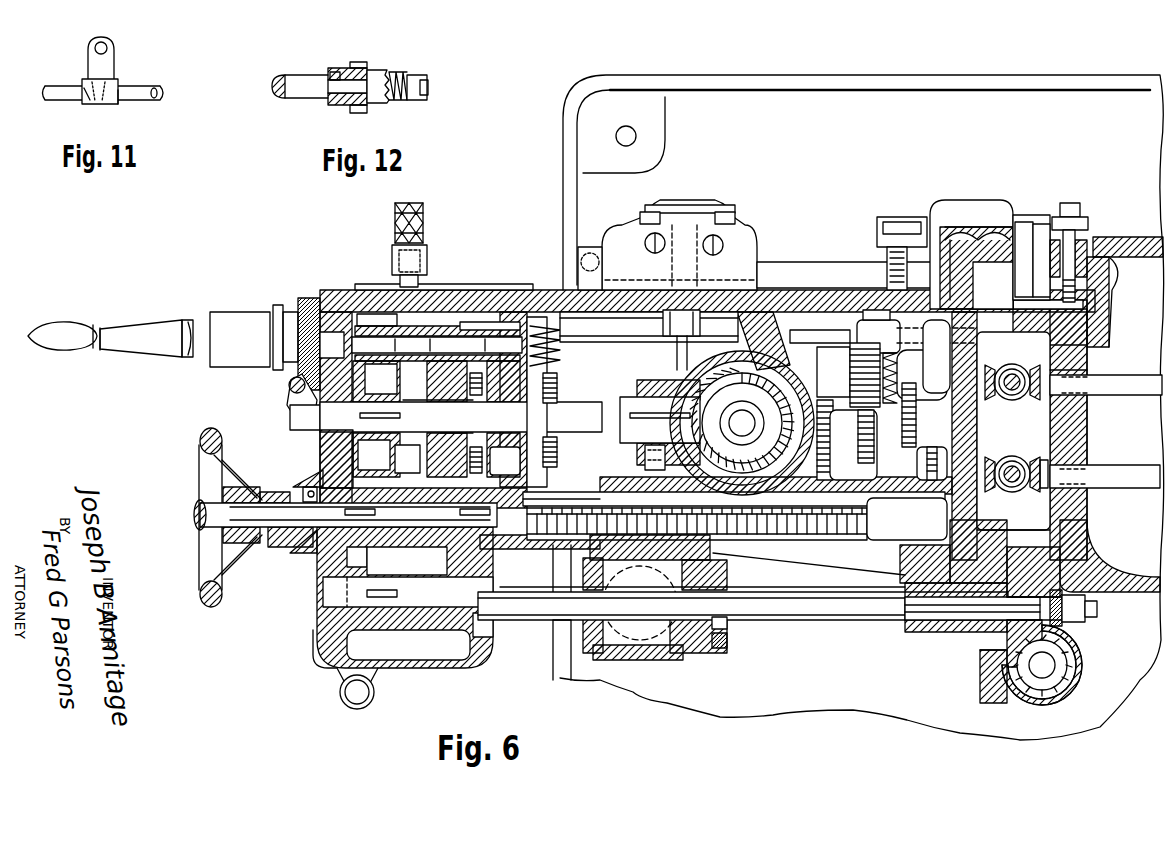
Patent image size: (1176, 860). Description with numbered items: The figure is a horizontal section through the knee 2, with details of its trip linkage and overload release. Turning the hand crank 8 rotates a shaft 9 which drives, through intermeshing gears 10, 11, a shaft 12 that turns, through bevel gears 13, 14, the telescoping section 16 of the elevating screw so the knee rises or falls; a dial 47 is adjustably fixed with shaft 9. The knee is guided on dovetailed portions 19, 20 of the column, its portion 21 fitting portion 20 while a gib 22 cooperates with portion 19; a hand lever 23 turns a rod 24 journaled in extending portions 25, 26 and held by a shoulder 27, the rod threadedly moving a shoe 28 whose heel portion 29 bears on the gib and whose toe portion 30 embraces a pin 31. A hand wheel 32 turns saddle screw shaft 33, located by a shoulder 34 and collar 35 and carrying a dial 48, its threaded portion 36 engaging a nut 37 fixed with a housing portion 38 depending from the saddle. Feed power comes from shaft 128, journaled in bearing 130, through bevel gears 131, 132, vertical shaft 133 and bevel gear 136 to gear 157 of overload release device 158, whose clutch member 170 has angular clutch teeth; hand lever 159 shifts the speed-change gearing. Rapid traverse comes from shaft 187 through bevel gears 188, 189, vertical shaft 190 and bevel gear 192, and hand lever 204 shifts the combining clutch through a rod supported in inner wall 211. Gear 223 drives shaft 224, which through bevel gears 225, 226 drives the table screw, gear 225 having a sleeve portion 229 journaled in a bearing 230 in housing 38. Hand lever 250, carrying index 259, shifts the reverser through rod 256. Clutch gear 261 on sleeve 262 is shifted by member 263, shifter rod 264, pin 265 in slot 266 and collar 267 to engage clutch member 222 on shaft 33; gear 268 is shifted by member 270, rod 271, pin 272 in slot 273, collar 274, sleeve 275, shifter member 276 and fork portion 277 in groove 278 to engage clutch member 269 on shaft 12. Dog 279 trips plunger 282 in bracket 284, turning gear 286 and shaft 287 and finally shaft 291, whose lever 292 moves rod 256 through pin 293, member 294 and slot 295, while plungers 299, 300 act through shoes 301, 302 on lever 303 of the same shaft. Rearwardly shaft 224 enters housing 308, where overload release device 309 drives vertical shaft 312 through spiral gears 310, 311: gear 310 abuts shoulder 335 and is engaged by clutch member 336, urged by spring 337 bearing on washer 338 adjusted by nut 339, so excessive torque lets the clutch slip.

In FIG. 6, the knee 2 is at (540, 290).
In FIG. 6, the hand crank 8 is at (135, 330).
In FIG. 6, the shaft 9 is at (332, 344).
In FIG. 6, the gear 10 is at (377, 317).
In FIG. 6, the gear 11 is at (381, 379).
In FIG. 6, the shaft 12 is at (461, 417).
In FIG. 6, the bevel gear 13 is at (698, 385).
In FIG. 6, the bevel gear 14 is at (759, 376).
In FIG. 6, the telescoping section 16 is at (742, 423).
In FIG. 6, the dovetailed portion 19 is at (980, 343).
In FIG. 6, the dovetailed portion 20 is at (985, 535).
In FIG. 6, the knee portion 21 is at (945, 585).
In FIG. 6, the gib 22 is at (1090, 322).
In FIG. 6, the hand lever 23 is at (595, 250).
In FIG. 6, the rod 24 is at (780, 262).
In FIG. 6, the extending portion 25 is at (740, 250).
In FIG. 6, the extending portion 26 is at (938, 215).
In FIG. 6, the shoulder 27 is at (955, 237).
In FIG. 6, the shoe 28 is at (998, 237).
In FIG. 6, the heel portion 29 is at (1085, 306).
In FIG. 6, the toe portion 30 is at (1025, 220).
In FIG. 6, the pin 31 is at (1040, 215).
In FIG. 6, the hand wheel 32 is at (205, 438).
In FIG. 6, the shaft 33 is at (530, 498).
In FIG. 6, the shoulder 34 is at (373, 518).
In FIG. 6, the collar 35 is at (293, 567).
In FIG. 6, the threaded portion 36 is at (868, 515).
In FIG. 6, the nut 37 is at (690, 504).
In FIG. 6, the housing portion 38 is at (578, 645).
In FIG. 6, the dial 47 is at (305, 298).
In FIG. 6, the dial 48 is at (318, 470).
In FIG. 6, the shaft 128 is at (1105, 378).
In FIG. 6, the bearing 130 is at (1090, 370).
In FIG. 6, the bevel gear 131 is at (1045, 358).
In FIG. 6, the bevel gear 132 is at (1032, 400).
In FIG. 6, the vertical shaft 133 is at (1012, 400).
In FIG. 6, the bevel gear 136 is at (992, 400).
In FIG. 6, the gear 157 is at (858, 372).
In FIG. 6, the overload release device 158 is at (915, 405).
In FIG. 6, the hand lever 159 is at (392, 255).
In FIG. 6, the clutch member 170 is at (895, 400).
In FIG. 6, the shaft 187 is at (1133, 455).
In FIG. 6, the bevel gear 188 is at (1040, 458).
In FIG. 6, the bevel gear 189 is at (1025, 492).
In FIG. 6, the vertical shaft 190 is at (1022, 448).
In FIG. 6, the bevel gear 192 is at (992, 490).
In FIG. 6, the hand lever 204 is at (290, 398).
In FIG. 6, the inner wall 211 is at (500, 288).
In FIG. 6, the clutch member 222 is at (377, 455).
In FIG. 6, the gear 223 is at (390, 648).
In FIG. 12, the shaft 224 is at (312, 78).
In FIG. 6, the shaft 224 is at (528, 615).
In FIG. 6, the bevel gear 225 is at (665, 655).
In FIG. 6, the bevel gear 226 is at (640, 638).
In FIG. 6, the sleeve portion 229 is at (728, 622).
In FIG. 6, the bearing 230 is at (727, 640).
In FIG. 6, the hand lever 250 is at (374, 692).
In FIG. 11, the rod 256 is at (150, 103).
In FIG. 6, the index 259 is at (312, 640).
In FIG. 6, the clutch gear 261 is at (409, 459).
In FIG. 6, the sleeve 262 is at (397, 565).
In FIG. 6, the manually operable member 263 is at (200, 510).
In FIG. 6, the shifter rod 264 is at (270, 490).
In FIG. 6, the pin 265 is at (458, 518).
In FIG. 6, the slot 266 is at (565, 480).
In FIG. 6, the collar 267 is at (503, 461).
In FIG. 6, the gear 268 is at (436, 419).
In FIG. 6, the clutch member 269 is at (438, 411).
In FIG. 6, the manually operable member 270 is at (187, 320).
In FIG. 6, the shifter rod 271 is at (437, 349).
In FIG. 6, the pin 272 is at (445, 345).
In FIG. 6, the slot 273 is at (490, 345).
In FIG. 6, the collar 274 is at (462, 316).
In FIG. 6, the sleeve 275 is at (437, 322).
In FIG. 6, the shifter member 276 is at (409, 345).
In FIG. 6, the fork portion 277 is at (456, 425).
In FIG. 6, the annular groove 278 is at (464, 427).
In FIG. 6, the dog 279 is at (1070, 205).
In FIG. 6, the trip plunger 282 is at (900, 217).
In FIG. 6, the bracket 284 is at (970, 200).
In FIG. 6, the gear 286 is at (880, 220).
In FIG. 6, the shaft 287 is at (887, 250).
In FIG. 11, the shaft 291 is at (106, 42).
In FIG. 6, the shaft 291 is at (655, 385).
In FIG. 11, the lever 292 is at (108, 62).
In FIG. 6, the lever 292 is at (650, 462).
In FIG. 11, the pin 293 is at (104, 104).
In FIG. 11, the member 294 is at (118, 104).
In FIG. 11, the slot 295 is at (86, 105).
In FIG. 6, the plunger 299 is at (715, 255).
In FIG. 6, the plunger 300 is at (650, 255).
In FIG. 6, the shoe 301 is at (725, 225).
In FIG. 6, the shoe 302 is at (645, 225).
In FIG. 6, the lever 303 is at (675, 205).
In FIG. 6, the housing 308 is at (1062, 698).
In FIG. 6, the overload release device 309 is at (1068, 645).
In FIG. 12, the spiral gear 310 is at (333, 68).
In FIG. 6, the spiral gear 310 is at (985, 650).
In FIG. 6, the spiral gear 311 is at (985, 680).
In FIG. 6, the vertical shaft 312 is at (1042, 665).
In FIG. 12, the shoulder 335 is at (346, 70).
In FIG. 6, the shoulder 335 is at (1008, 612).
In FIG. 12, the clutch member 336 is at (380, 70).
In FIG. 6, the clutch member 336 is at (1075, 580).
In FIG. 12, the spring 337 is at (400, 72).
In FIG. 6, the spring 337 is at (1090, 592).
In FIG. 6, the plate or washer 338 is at (1090, 600).
In FIG. 12, the nut 339 is at (425, 78).
In FIG. 6, the nut 339 is at (1085, 625).